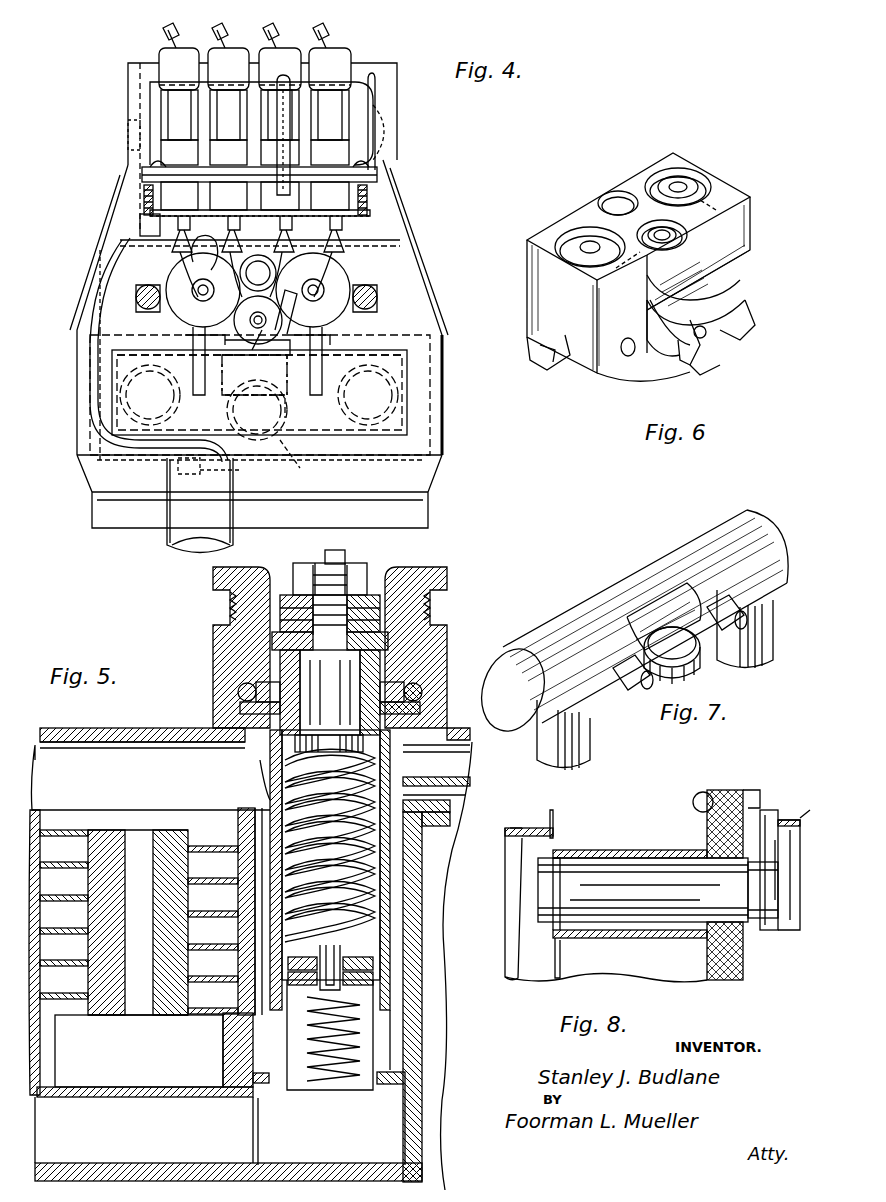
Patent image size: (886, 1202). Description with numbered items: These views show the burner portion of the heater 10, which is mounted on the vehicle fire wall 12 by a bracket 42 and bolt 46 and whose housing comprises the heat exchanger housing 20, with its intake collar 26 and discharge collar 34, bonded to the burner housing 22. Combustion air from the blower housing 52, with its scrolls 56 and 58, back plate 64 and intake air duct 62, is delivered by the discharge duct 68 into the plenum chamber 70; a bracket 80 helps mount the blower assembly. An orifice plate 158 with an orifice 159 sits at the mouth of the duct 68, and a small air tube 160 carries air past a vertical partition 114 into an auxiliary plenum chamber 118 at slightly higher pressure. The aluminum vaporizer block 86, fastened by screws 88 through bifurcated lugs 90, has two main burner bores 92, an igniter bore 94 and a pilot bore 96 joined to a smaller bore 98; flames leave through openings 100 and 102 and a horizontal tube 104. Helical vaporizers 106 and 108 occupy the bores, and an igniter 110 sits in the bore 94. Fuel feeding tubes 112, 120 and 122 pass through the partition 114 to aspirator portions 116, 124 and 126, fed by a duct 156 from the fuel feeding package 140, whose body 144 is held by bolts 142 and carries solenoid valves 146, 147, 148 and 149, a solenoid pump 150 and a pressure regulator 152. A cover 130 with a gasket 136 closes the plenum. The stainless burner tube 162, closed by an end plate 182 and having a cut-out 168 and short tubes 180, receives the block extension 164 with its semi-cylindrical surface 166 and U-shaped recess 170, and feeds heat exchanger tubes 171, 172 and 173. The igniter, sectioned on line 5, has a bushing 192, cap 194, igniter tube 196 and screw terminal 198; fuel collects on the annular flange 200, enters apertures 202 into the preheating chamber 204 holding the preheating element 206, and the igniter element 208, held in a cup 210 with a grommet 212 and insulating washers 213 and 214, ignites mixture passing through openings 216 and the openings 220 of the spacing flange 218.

In FIG. 4, the section line 5 is at (258, 341).
In FIG. 4, the heater 10 is at (451, 444).
In FIG. 6, the heater 10 is at (722, 209).
In FIG. 8, the fire wall 12 is at (710, 835).
In FIG. 4, the heat exchanger housing 20 is at (400, 202).
In FIG. 4, the burner housing 22 is at (444, 345).
In FIG. 8, the burner housing 22 is at (772, 920).
In FIG. 5, the burner housing 22 is at (445, 1100).
In FIG. 4, the flange or collar 26 is at (128, 75).
In FIG. 4, the flange or collar 34 is at (92, 515).
In FIG. 8, the bracket 42 is at (770, 812).
In FIG. 8, the bolt 46 is at (720, 795).
In FIG. 8, the blower housing 52 is at (550, 818).
In FIG. 8, the outer blower scroll 56 is at (512, 850).
In FIG. 8, the inner blower scroll 58 is at (556, 855).
In FIG. 8, the intake air duct 62 is at (648, 858).
In FIG. 8, the back plate 64 is at (550, 845).
In FIG. 4, the discharge duct 68 is at (170, 540).
In FIG. 8, the discharge duct 68 is at (626, 858).
In FIG. 4, the plenum chamber 70 is at (420, 292).
In FIG. 5, the plenum chamber 70 is at (108, 776).
In FIG. 8, the bracket 80 is at (693, 802).
In FIG. 4, the fuel vaporizer block 86 is at (395, 330).
In FIG. 6, the fuel vaporizer block 86 is at (527, 270).
In FIG. 5, the fuel vaporizer block 86 is at (223, 1045).
In FIG. 4, the screws 88 is at (136, 290).
In FIG. 4, the bifurcated lugs 90 is at (140, 302).
In FIG. 6, the bifurcated lugs 90 is at (538, 375).
In FIG. 4, the main burner bores 92 is at (185, 312).
In FIG. 6, the main burner bores 92 is at (680, 172).
In FIG. 4, the igniter bore 94 is at (256, 258).
In FIG. 6, the igniter bore 94 is at (616, 192).
In FIG. 5, the igniter bore 94 is at (392, 935).
In FIG. 4, the pilot burner bore 96 is at (247, 320).
In FIG. 6, the pilot burner bore 96 is at (688, 228).
In FIG. 5, the pilot burner bore 96 is at (55, 815).
In FIG. 5, the smaller bore 98 is at (126, 1072).
In FIG. 6, the main burner flame openings 100 is at (735, 292).
In FIG. 6, the pilot flame opening 102 is at (712, 355).
In FIG. 6, the horizontal tube 104 is at (700, 370).
In FIG. 5, the horizontal tube 104 is at (168, 1135).
In FIG. 4, the helical vaporizers 106 is at (325, 298).
In FIG. 6, the helical vaporizers 106 is at (695, 184).
In FIG. 4, the helical vaporizer 108 is at (254, 362).
In FIG. 6, the helical vaporizer 108 is at (665, 239).
In FIG. 5, the helical vaporizer 108 is at (75, 830).
In FIG. 5, the igniter 110 is at (195, 614).
In FIG. 4, the fuel feeding tube 112 is at (302, 312).
In FIG. 4, the vertical partition 114 is at (120, 244).
In FIG. 4, the aspirator portion 116 is at (305, 196).
In FIG. 4, the auxiliary plenum chamber 118 is at (148, 206).
In FIG. 4, the fuel feeding tube 120 is at (207, 258).
In FIG. 5, the fuel feeding tube 120 is at (455, 780).
In FIG. 4, the fuel feeding tube 122 is at (140, 246).
In FIG. 5, the fuel feeding tube 122 is at (450, 796).
In FIG. 4, the aspirator portion 124 is at (204, 196).
In FIG. 4, the aspirator portion 126 is at (145, 230).
In FIG. 5, the cover 130 is at (150, 730).
In FIG. 5, the gasket 136 is at (65, 745).
In FIG. 4, the fuel feeding package 140 is at (375, 56).
In FIG. 4, the bolts 142 is at (146, 192).
In FIG. 4, the frame or body 144 is at (372, 172).
In FIG. 4, the solenoid-operated fuel valve 146 is at (159, 58).
In FIG. 4, the solenoid-operated fuel valve 147 is at (232, 60).
In FIG. 4, the solenoid-operated fuel valve 148 is at (283, 60).
In FIG. 4, the solenoid-operated fuel valve 149 is at (336, 60).
In FIG. 4, the solenoid pump 150 is at (153, 112).
In FIG. 4, the fuel pressure regulator 152 is at (383, 110).
In FIG. 4, the duct 156 is at (270, 205).
In FIG. 4, the orifice plate 158 is at (178, 468).
In FIG. 4, the orifice 159 is at (225, 472).
In FIG. 4, the air tube 160 is at (95, 368).
In FIG. 4, the burner tube 162 is at (345, 430).
In FIG. 7, the burner tube 162 is at (580, 615).
In FIG. 4, the extension 164 is at (240, 380).
In FIG. 6, the extension 164 is at (748, 252).
In FIG. 6, the semi-cylindrical surface 166 is at (650, 318).
In FIG. 4, the cut-out 168 is at (290, 400).
In FIG. 7, the cut-out 168 is at (660, 600).
In FIG. 6, the U-shaped recess 170 is at (738, 345).
In FIG. 4, the heat exchanger tube 171 is at (95, 416).
In FIG. 7, the heat exchanger tube 171 is at (773, 655).
In FIG. 4, the heat exchanger tube 172 is at (280, 440).
In FIG. 7, the heat exchanger tube 172 is at (700, 672).
In FIG. 4, the heat exchanger tube 173 is at (415, 392).
In FIG. 7, the heat exchanger tube 173 is at (592, 742).
In FIG. 4, the tubes or sleeves 180 is at (180, 388).
In FIG. 7, the tubes or sleeves 180 is at (750, 620).
In FIG. 7, the end plate 182 is at (512, 660).
In FIG. 5, the bushing 192 is at (214, 645).
In FIG. 5, the cap 194 is at (447, 575).
In FIG. 4, the igniter tube 196 is at (278, 270).
In FIG. 5, the igniter tube 196 is at (390, 760).
In FIG. 5, the screw terminal 198 is at (347, 556).
In FIG. 5, the annular flange 200 is at (440, 826).
In FIG. 5, the apertures 202 is at (270, 800).
In FIG. 5, the preheating chamber 204 is at (362, 965).
In FIG. 5, the preheating element 206 is at (375, 870).
In FIG. 5, the igniter element 208 is at (360, 1085).
In FIG. 5, the cup or housing 210 is at (295, 1090).
In FIG. 5, the grommet 212 is at (385, 980).
In FIG. 5, the insulating washer 213 is at (290, 965).
In FIG. 5, the insulating washer 214 is at (280, 985).
In FIG. 5, the openings 216 is at (280, 936).
In FIG. 5, the spacing flange 218 is at (405, 1078).
In FIG. 5, the openings 220 is at (253, 1078).